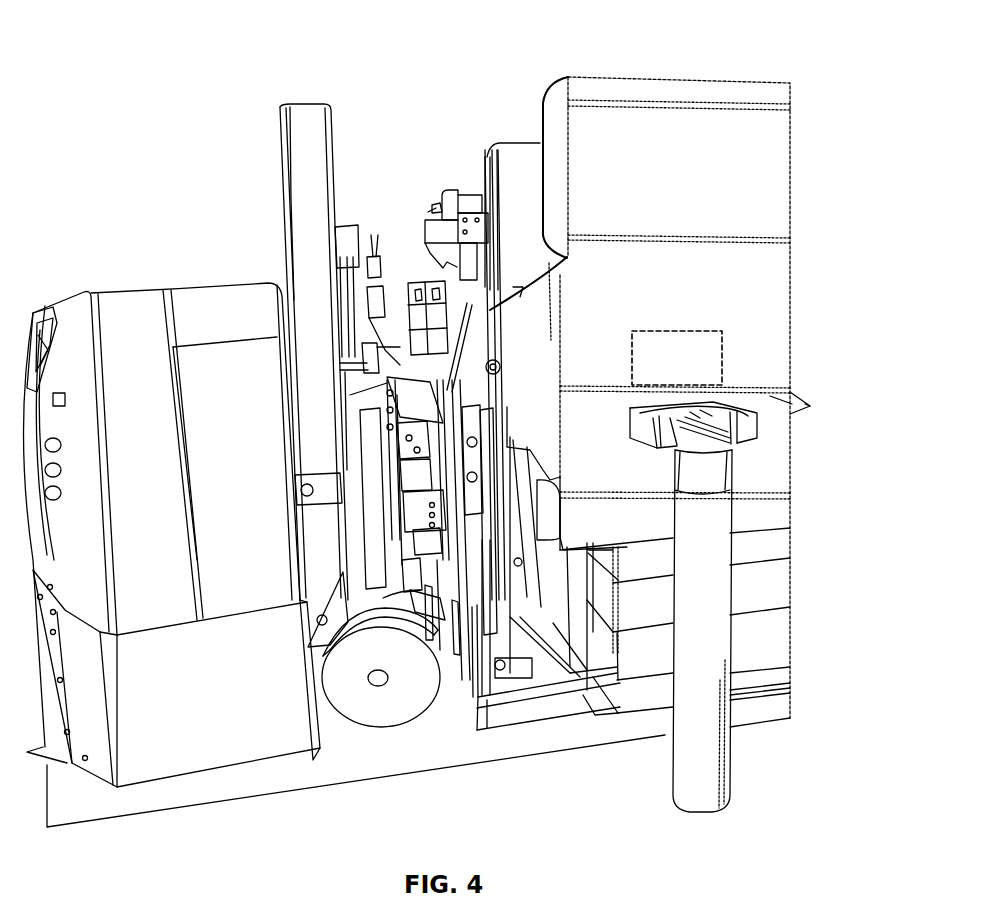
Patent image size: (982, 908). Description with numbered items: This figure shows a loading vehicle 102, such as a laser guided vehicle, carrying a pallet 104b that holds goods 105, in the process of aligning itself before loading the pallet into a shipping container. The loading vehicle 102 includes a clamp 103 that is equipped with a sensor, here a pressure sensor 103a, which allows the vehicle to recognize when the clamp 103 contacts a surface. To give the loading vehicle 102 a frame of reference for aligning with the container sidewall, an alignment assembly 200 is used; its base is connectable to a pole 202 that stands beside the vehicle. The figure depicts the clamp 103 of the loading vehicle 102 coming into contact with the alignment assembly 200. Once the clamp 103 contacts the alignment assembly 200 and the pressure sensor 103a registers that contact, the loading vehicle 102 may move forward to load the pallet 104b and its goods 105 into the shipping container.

The loading vehicle 102 is at (200, 757).
The clamp 103 is at (688, 82).
The pressure sensor 103a is at (706, 370).
The alignment assembly 200 is at (760, 432).
The pole 202 is at (672, 780).
The goods 105 is at (780, 542).
The pallet 104b is at (780, 675).